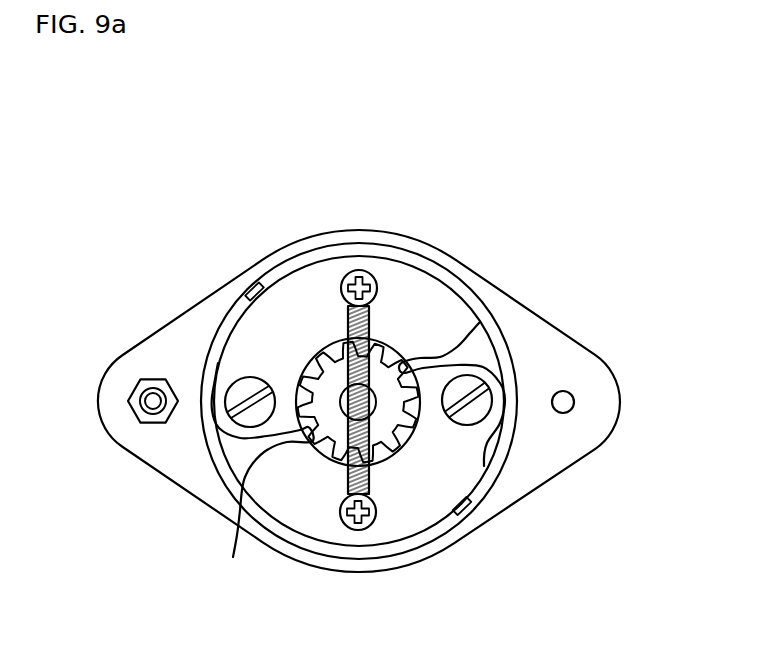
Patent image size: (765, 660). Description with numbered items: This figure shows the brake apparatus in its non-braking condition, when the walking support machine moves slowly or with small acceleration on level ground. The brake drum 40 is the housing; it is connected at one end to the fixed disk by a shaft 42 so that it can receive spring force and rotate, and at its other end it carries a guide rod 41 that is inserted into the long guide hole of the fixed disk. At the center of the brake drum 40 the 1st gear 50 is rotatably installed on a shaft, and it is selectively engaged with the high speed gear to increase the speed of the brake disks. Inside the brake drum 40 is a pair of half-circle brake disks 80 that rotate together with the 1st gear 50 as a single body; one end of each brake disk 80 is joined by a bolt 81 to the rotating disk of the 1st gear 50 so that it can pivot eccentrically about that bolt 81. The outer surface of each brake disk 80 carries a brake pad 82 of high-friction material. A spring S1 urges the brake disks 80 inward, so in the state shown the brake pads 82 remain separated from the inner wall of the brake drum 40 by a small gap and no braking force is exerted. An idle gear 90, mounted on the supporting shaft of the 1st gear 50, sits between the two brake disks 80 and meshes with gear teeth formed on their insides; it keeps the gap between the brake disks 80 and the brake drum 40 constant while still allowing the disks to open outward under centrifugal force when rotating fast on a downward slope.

The brake drum 40 is at (503, 288).
The guide rod 41 is at (574, 402).
The shaft 42 is at (153, 403).
The 1st gear 50 is at (473, 348).
The brake disk 80 is at (410, 300).
The bolt 81 is at (242, 387).
The brake pad 82 is at (250, 289).
The idle gear 90 is at (309, 440).
The spring S1 is at (370, 480).